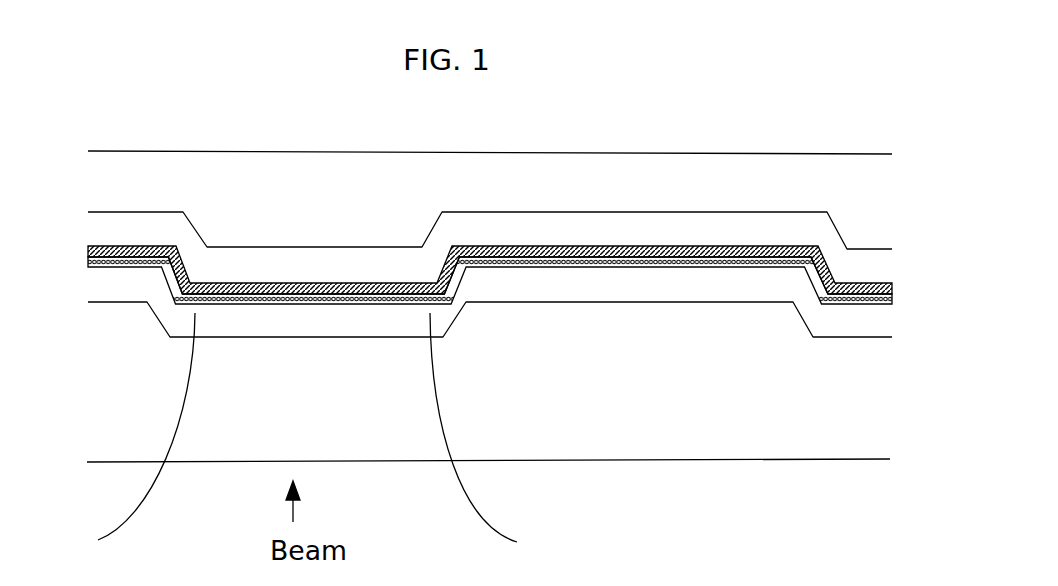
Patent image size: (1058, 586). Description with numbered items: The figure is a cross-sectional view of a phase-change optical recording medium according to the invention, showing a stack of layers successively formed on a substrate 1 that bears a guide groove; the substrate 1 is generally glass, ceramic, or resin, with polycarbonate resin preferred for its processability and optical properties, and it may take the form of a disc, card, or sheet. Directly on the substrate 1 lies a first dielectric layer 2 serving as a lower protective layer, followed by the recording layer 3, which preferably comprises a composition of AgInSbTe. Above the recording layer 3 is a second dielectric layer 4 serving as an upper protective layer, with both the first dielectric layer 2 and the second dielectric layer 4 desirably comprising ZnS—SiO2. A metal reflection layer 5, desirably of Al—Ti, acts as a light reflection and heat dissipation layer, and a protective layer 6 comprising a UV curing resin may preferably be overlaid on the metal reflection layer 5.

The substrate 1 is at (488, 423).
The first dielectric layer 2 is at (490, 303).
The recording layer 3 is at (92, 263).
The second dielectric layer 4 is at (88, 247).
The metal reflection layer 5 is at (490, 230).
The protective layer 6 is at (490, 172).